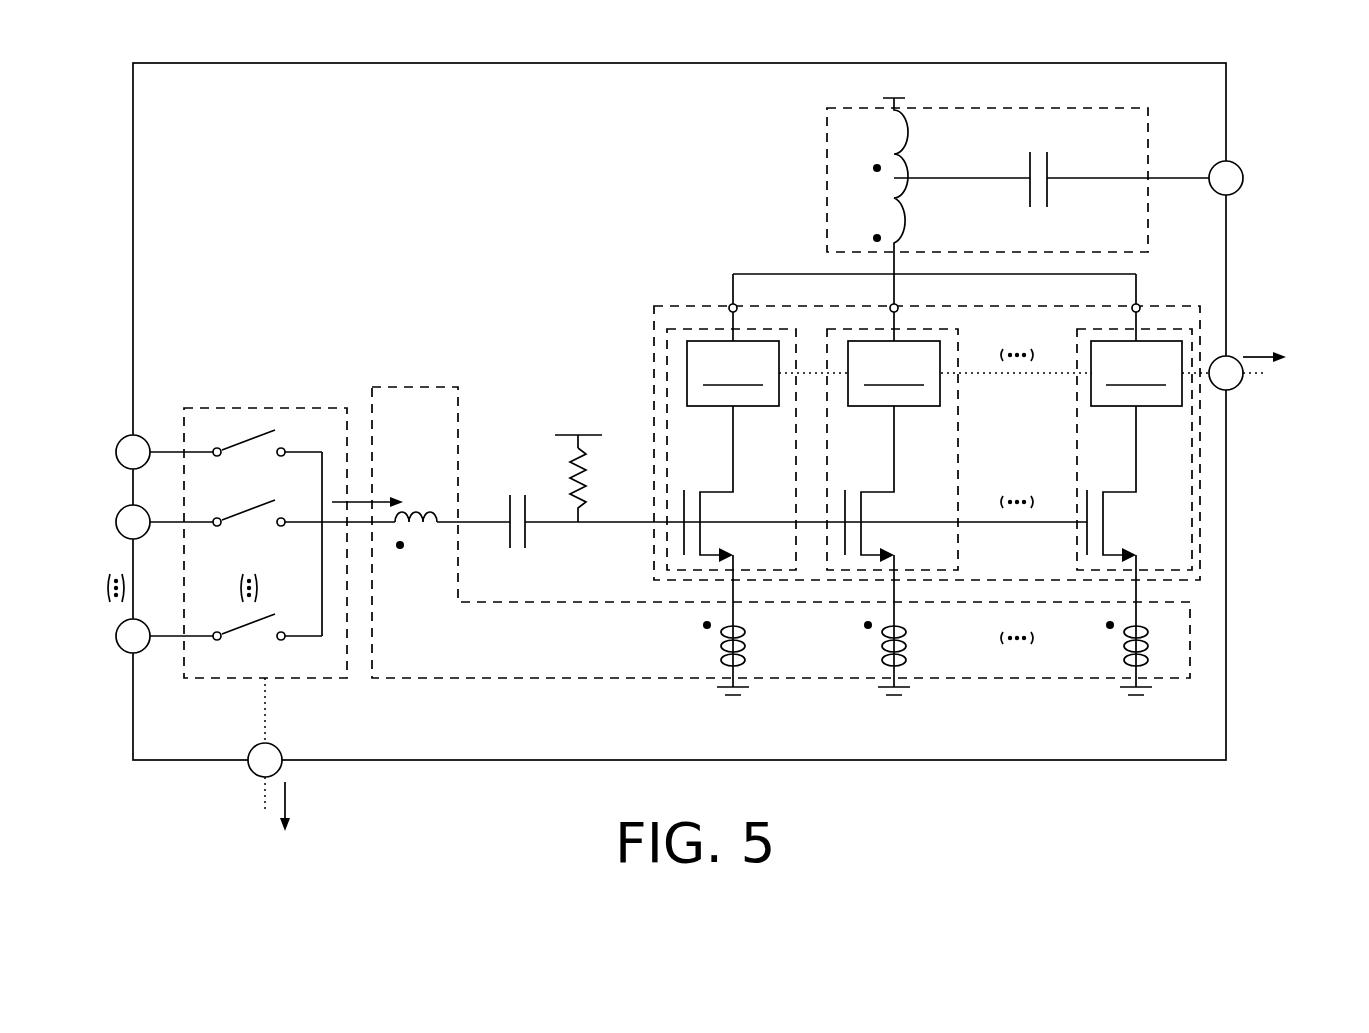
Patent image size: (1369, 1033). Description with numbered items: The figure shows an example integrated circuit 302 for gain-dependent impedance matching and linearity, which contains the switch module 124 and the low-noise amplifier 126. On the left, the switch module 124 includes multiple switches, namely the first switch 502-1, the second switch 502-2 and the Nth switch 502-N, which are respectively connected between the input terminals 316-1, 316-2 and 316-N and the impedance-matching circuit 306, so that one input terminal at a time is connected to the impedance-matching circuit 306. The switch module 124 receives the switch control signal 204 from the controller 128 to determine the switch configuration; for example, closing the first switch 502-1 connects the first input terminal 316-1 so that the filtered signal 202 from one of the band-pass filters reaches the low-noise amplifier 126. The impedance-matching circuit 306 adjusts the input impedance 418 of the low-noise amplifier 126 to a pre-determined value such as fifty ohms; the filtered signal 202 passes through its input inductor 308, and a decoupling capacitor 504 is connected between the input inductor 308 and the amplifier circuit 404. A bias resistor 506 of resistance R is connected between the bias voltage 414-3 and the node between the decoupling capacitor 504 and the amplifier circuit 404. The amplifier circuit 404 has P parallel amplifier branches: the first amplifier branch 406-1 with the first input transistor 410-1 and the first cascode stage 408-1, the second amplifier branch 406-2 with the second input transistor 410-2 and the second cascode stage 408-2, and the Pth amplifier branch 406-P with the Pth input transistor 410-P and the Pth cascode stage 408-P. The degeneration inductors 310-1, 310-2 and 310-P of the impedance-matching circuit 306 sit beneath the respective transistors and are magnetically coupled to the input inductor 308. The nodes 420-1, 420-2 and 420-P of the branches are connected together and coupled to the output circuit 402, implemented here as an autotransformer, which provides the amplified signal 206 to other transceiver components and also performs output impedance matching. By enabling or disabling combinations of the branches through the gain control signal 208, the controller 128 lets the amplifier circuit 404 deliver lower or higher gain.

The low-noise amplifier 126 is at (381, 131).
The integrated circuit 302 is at (133, 200).
The first input terminal 316-1 is at (122, 444).
The second input terminal 316-2 is at (122, 514).
The Nth input terminal 316-N is at (122, 628).
The switch module 124 is at (246, 509).
The first switch S1 502-1 is at (262, 457).
The second switch S2 502-2 is at (262, 527).
The Nth switch SN 502-N is at (262, 641).
The input impedance 418 is at (375, 488).
The impedance-matching circuit 306 is at (447, 387).
The input inductor 308 is at (428, 530).
The filtered signal 202 is at (359, 527).
The decoupling capacitor 504 is at (531, 534).
The bias voltage VBias 414-3 is at (576, 433).
The bias resistor 506 is at (578, 462).
The amplifier circuit 404 is at (654, 352).
The gain control signal 208 is at (980, 373).
The first amplifier branch 406-1 is at (667, 410).
The second amplifier branch 406-2 is at (957, 425).
The Pth amplifier branch 406-P is at (1077, 450).
The node of first amplifier branch 420-1 is at (730, 305).
The node of second amplifier branch 420-2 is at (891, 305).
The node of Pth amplifier branch 420-P is at (1133, 305).
The first cascode stage 408-1 is at (733, 373).
The second cascode stage 408-2 is at (894, 373).
The Pth cascode stage 408-P is at (1136, 373).
The first input transistor Q1 410-1 is at (746, 490).
The second input transistor Q2 410-2 is at (907, 490).
The Pth input transistor QP 410-P is at (1149, 493).
The first degeneration inductor 310-1 is at (748, 634).
The second degeneration inductor 310-2 is at (909, 634).
The Pth degeneration inductor 310-P is at (1151, 634).
The output circuit 402 is at (826, 153).
The amplified signal 206 is at (1188, 178).
The controller 128 is at (795, 566).
The switch control signal 204 is at (267, 710).